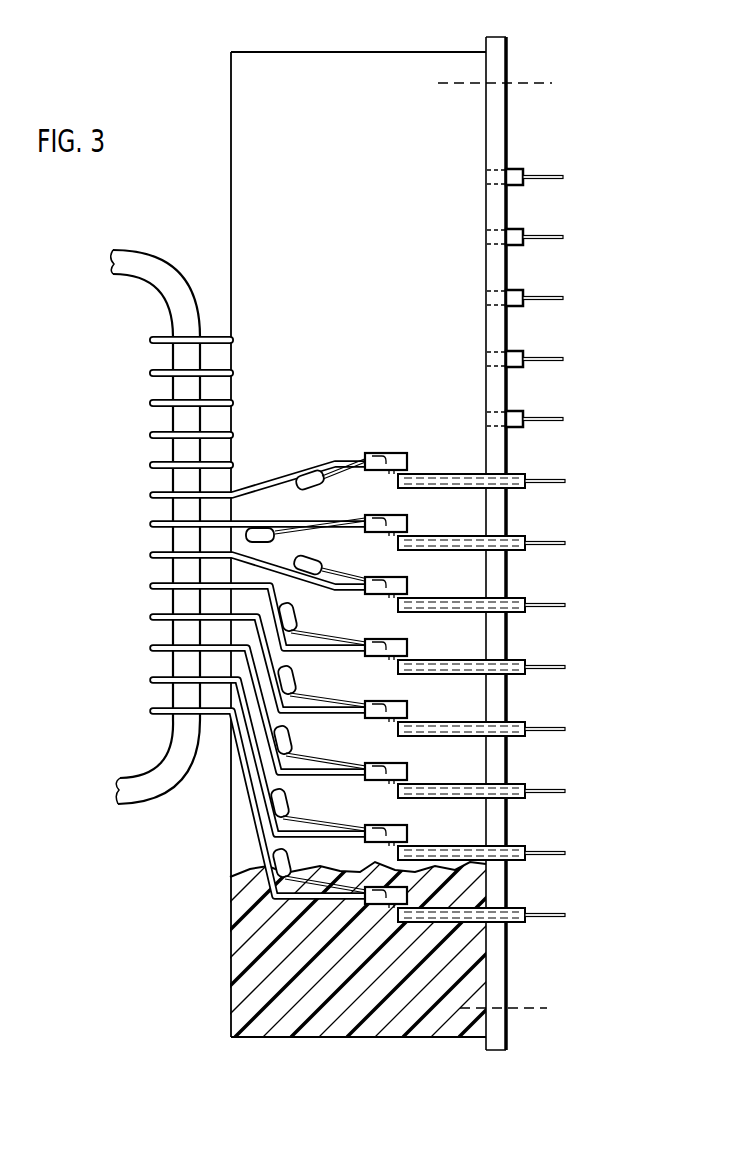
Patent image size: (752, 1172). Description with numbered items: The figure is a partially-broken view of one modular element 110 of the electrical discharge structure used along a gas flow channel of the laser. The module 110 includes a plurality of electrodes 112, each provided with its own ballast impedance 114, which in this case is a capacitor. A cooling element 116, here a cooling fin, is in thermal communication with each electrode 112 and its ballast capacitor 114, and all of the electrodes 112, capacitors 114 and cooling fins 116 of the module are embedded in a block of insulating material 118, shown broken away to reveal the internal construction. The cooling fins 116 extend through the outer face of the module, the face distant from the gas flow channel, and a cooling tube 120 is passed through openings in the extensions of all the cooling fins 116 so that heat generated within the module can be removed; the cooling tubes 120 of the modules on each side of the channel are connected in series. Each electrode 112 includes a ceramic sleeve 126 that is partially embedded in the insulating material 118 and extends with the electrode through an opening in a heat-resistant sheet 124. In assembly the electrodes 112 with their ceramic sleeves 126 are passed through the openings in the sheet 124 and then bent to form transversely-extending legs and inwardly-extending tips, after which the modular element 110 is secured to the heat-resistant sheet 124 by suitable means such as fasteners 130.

The modular element 110 is at (309, 60).
The electrode 112 is at (547, 356).
The ballast impedance 114 is at (270, 803).
The cooling element 116 is at (258, 822).
The block of insulating material 118 is at (242, 977).
The cooling tube 120 is at (130, 800).
The heat-resistant sheet 124 is at (493, 397).
The ceramic sleeve 126 is at (522, 489).
The fastener 130 is at (545, 84).